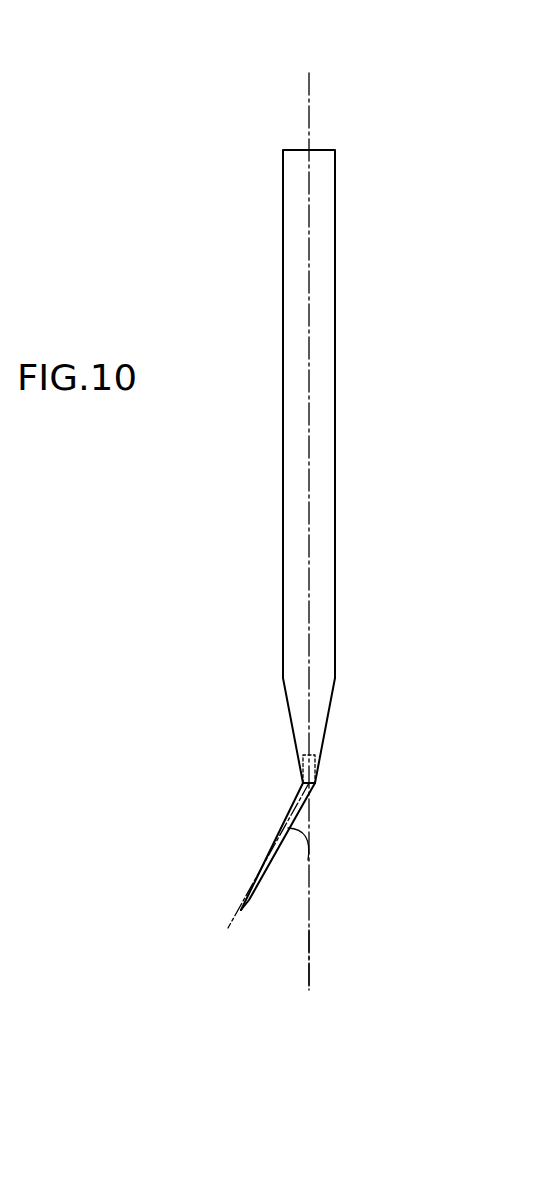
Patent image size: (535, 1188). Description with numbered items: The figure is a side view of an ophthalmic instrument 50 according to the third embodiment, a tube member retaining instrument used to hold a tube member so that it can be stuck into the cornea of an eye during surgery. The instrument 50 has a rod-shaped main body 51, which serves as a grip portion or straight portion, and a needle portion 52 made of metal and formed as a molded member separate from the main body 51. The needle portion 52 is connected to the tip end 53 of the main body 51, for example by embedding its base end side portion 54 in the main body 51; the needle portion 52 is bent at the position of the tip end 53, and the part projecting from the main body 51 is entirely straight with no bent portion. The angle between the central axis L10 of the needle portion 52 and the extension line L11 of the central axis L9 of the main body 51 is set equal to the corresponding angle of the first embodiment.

The instrument 50 is at (170, 160).
The main body 51 is at (327, 408).
The needle portion 52 is at (256, 887).
The tip end 53 is at (311, 784).
The base end side portion 54 is at (321, 755).
The central axis L9 is at (309, 268).
The central axis L10 is at (289, 827).
The extension line L11 is at (310, 962).